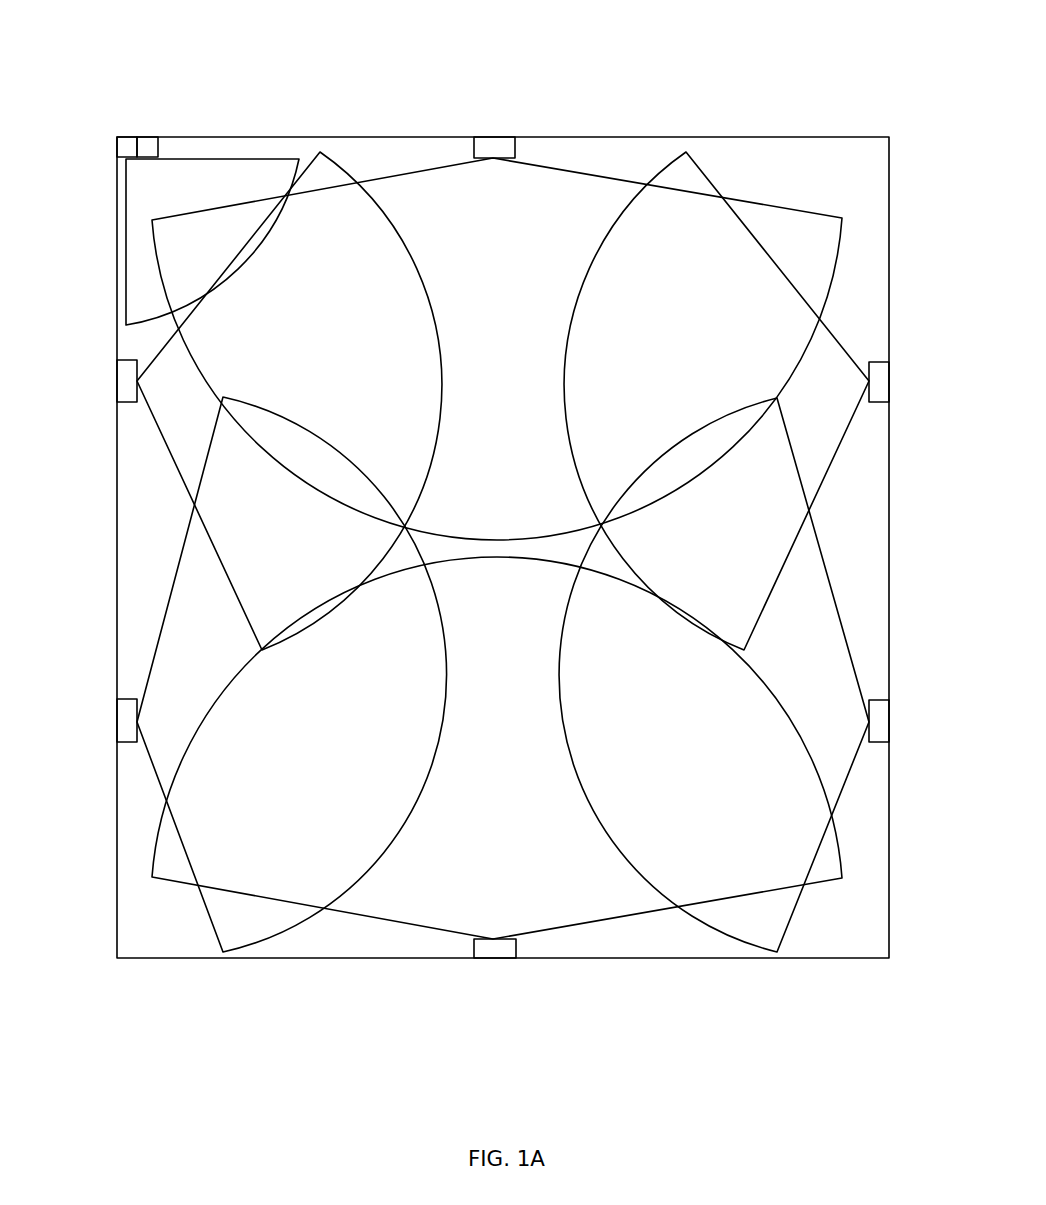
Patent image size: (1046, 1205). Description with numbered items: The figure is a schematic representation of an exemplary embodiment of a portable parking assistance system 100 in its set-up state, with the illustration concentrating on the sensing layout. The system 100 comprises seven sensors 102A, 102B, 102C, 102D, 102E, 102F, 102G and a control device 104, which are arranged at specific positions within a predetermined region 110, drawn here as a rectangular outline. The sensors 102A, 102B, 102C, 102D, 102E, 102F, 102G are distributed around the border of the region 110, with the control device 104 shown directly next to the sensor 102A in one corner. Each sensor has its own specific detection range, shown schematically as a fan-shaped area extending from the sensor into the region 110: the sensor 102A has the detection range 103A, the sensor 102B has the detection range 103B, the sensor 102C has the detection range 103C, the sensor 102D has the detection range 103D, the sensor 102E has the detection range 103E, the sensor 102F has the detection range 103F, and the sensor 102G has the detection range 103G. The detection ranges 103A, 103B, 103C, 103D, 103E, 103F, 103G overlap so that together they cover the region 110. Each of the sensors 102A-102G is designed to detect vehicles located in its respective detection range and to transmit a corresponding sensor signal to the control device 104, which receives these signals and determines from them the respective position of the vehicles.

The portable parking assistance system 100 is at (220, 56).
The predetermined region 110 is at (365, 137).
The sensor 102A is at (128, 136).
The sensor 102B is at (493, 136).
The sensor 102C is at (890, 383).
The sensor 102D is at (890, 720).
The sensor 102E is at (495, 960).
The sensor 102F is at (117, 718).
The sensor 102G is at (117, 382).
The detection range 103A is at (245, 158).
The detection range 103B is at (593, 177).
The detection range 103C is at (847, 435).
The detection range 103D is at (850, 770).
The detection range 103E is at (405, 923).
The detection range 103F is at (150, 665).
The detection range 103G is at (155, 343).
The control device 104 is at (150, 136).